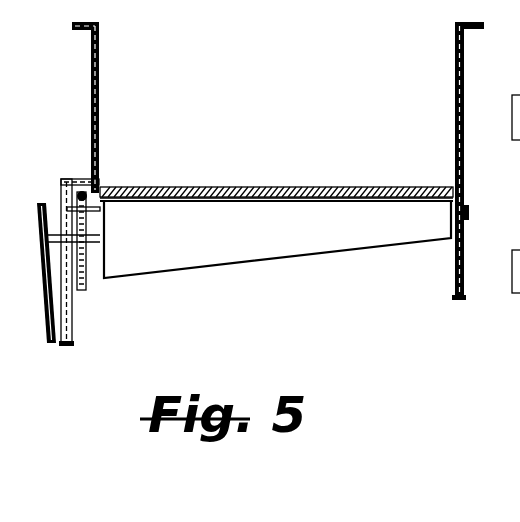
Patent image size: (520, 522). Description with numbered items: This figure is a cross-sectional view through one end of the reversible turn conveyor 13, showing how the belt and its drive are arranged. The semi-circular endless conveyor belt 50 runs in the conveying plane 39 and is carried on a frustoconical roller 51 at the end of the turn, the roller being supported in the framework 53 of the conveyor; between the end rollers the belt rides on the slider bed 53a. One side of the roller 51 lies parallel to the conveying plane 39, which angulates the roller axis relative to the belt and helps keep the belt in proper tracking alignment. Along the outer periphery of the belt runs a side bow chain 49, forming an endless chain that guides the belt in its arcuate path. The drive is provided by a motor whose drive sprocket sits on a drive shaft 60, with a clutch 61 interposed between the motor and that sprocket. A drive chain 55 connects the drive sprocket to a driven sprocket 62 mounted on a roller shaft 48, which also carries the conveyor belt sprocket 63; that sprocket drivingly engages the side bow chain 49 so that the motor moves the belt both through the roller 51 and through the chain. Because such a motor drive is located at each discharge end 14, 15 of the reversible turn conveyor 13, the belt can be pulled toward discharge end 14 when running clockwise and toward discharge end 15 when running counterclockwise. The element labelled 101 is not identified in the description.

The reversible turn conveyor 13 is at (274, 303).
The discharge end 14 is at (349, 254).
The discharge end 15 is at (6, 200).
The conveying plane 39 is at (276, 189).
The roller shaft 48 is at (100, 237).
The side bow chain 49 is at (84, 179).
The conveyor belt 50 is at (228, 191).
The roller 51 is at (290, 230).
The framework 53 is at (72, 347).
The slider bed 53a is at (199, 208).
The drive chain 55 is at (47, 347).
The drive shaft 60 is at (37, 250).
The clutch 61 is at (7, 253).
The driven sprocket 62 is at (32, 273).
The conveyor belt sprocket 63 is at (87, 286).
The terminal box 101 is at (519, 168).